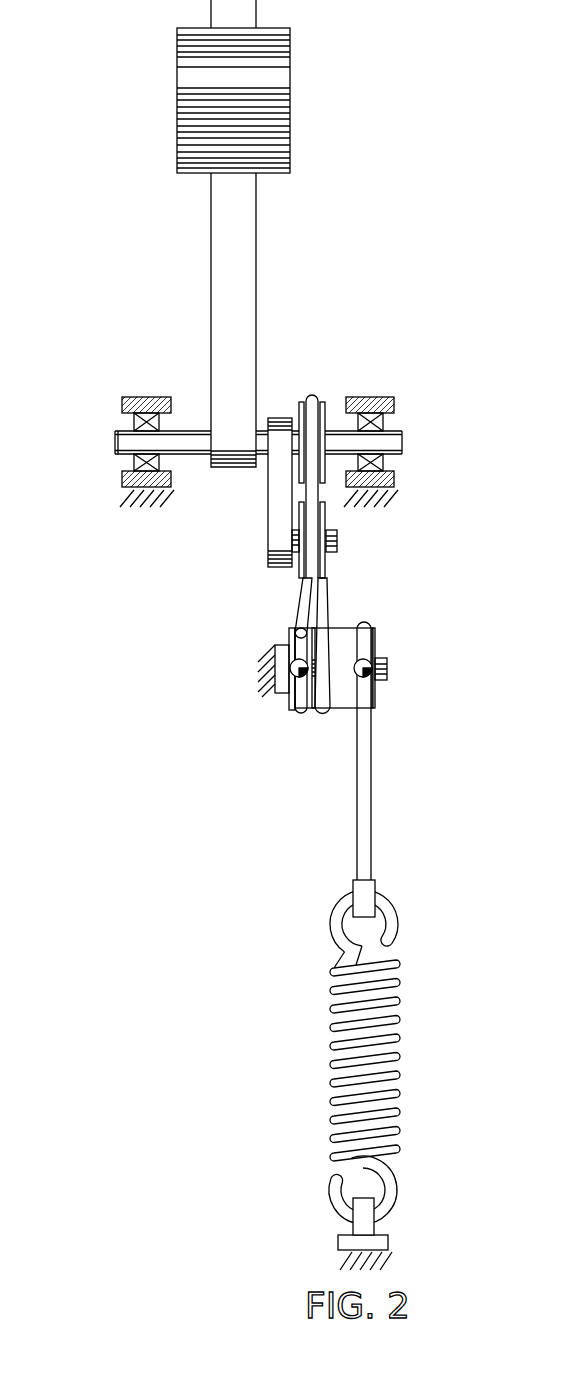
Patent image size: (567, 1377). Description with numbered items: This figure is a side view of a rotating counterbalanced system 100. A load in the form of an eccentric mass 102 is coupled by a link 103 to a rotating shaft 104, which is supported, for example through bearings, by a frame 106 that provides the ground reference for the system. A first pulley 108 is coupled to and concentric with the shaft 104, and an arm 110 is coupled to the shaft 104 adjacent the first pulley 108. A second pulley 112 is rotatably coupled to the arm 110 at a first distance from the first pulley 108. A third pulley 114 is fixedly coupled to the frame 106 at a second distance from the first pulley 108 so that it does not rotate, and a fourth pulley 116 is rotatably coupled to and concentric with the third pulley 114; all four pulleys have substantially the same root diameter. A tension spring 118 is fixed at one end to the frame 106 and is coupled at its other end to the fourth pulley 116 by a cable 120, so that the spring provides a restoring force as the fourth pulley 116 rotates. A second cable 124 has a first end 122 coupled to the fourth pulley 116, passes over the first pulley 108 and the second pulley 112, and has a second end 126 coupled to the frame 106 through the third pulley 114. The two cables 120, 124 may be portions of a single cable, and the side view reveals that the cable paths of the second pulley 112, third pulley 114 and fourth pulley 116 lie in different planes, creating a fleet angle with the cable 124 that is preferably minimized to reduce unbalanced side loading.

The rotating counterbalanced system 100 is at (245, 635).
The eccentric mass 102 is at (177, 82).
The link 103 is at (212, 303).
The rotating shaft 104 is at (193, 430).
The frame 106 is at (145, 510).
The first pulley 108 is at (318, 403).
The arm 110 is at (267, 493).
The second pulley 112 is at (322, 582).
The third pulley 114 is at (295, 712).
The fourth pulley 116 is at (372, 708).
The spring 118 is at (333, 970).
The cable 120 is at (357, 775).
The first end 122 is at (373, 657).
The cable 124 is at (297, 603).
The second end 126 is at (294, 650).